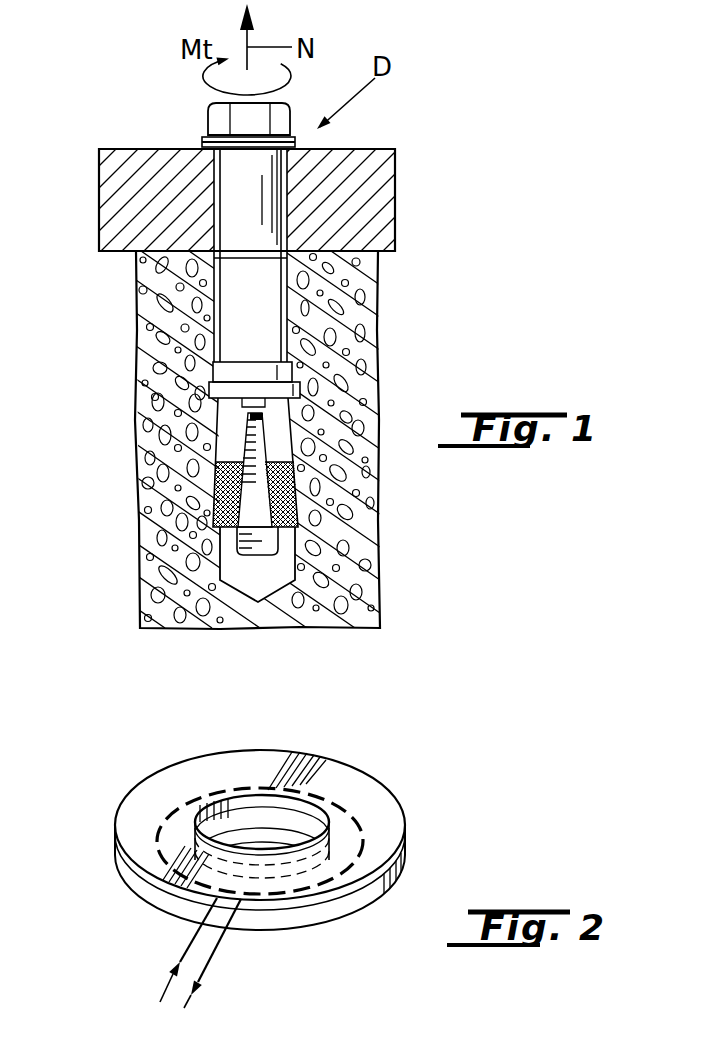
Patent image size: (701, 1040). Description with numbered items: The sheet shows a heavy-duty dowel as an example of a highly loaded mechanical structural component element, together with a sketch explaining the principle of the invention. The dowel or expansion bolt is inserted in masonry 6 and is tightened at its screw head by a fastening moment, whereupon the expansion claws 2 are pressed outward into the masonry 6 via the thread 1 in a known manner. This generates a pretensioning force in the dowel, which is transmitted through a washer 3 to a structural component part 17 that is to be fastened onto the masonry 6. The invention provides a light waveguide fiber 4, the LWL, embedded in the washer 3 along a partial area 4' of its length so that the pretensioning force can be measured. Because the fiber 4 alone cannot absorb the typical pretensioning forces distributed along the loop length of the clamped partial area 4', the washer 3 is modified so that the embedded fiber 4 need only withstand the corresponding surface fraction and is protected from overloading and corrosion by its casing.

In FIG. 1, the thread 1 is at (267, 538).
In FIG. 1, the expansion claws 2 is at (213, 491).
In FIG. 1, the washer 3 is at (196, 137).
In FIG. 2, the washer 3 is at (420, 839).
In FIG. 2, the light waveguide fiber 4 is at (231, 953).
In FIG. 2, the partial area 4' is at (245, 805).
In FIG. 1, the masonry 6 is at (355, 356).
In FIG. 1, the structural component part 17 is at (120, 195).